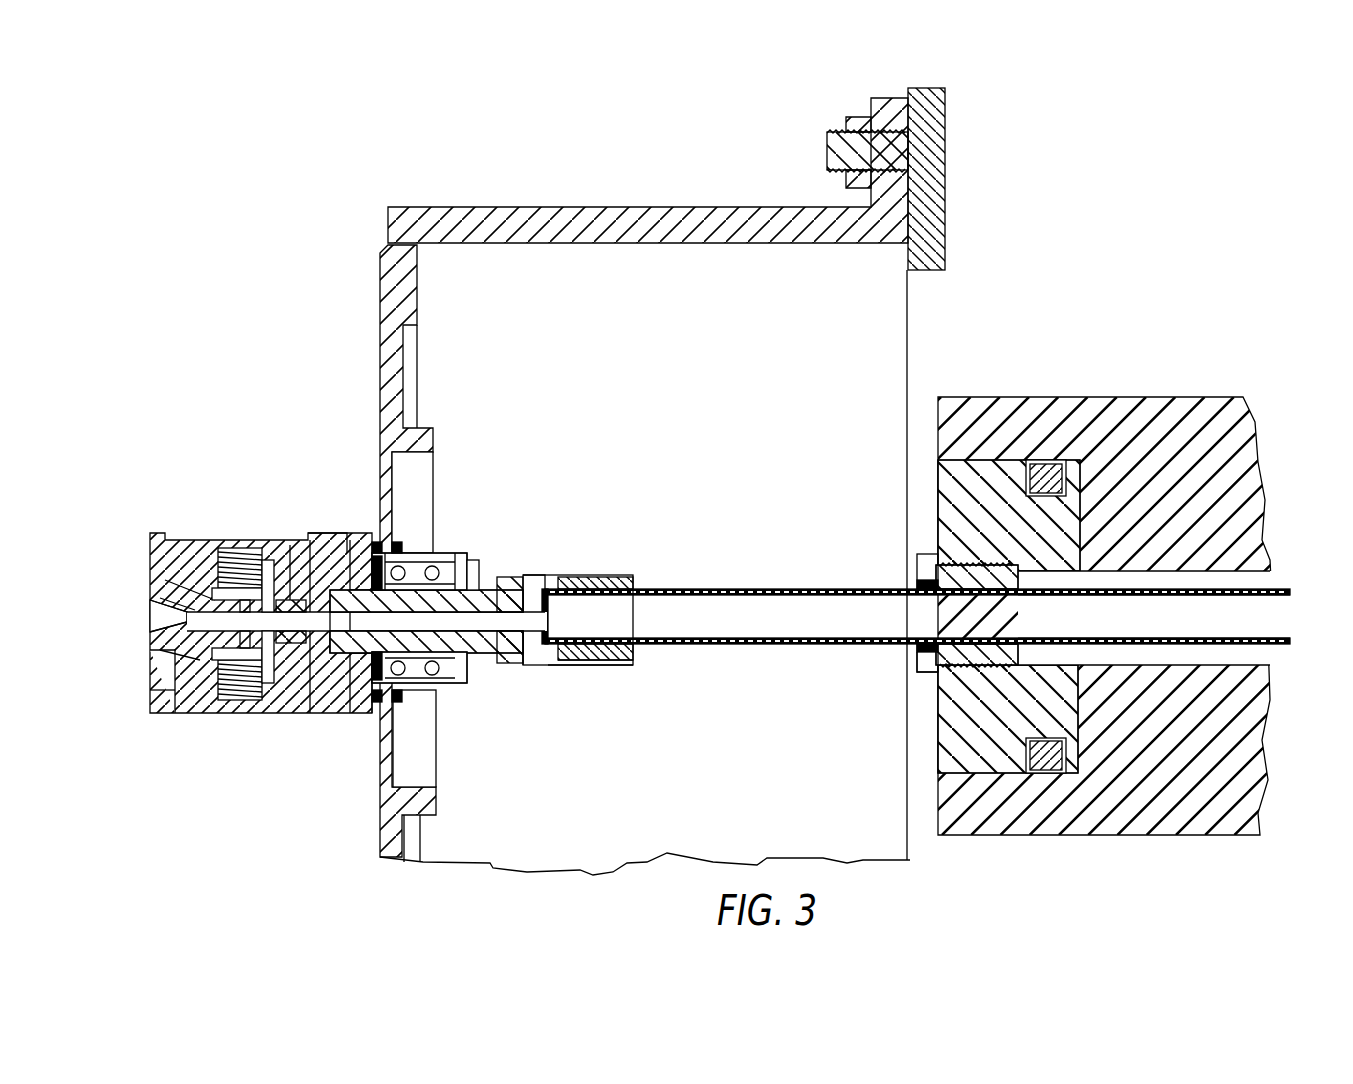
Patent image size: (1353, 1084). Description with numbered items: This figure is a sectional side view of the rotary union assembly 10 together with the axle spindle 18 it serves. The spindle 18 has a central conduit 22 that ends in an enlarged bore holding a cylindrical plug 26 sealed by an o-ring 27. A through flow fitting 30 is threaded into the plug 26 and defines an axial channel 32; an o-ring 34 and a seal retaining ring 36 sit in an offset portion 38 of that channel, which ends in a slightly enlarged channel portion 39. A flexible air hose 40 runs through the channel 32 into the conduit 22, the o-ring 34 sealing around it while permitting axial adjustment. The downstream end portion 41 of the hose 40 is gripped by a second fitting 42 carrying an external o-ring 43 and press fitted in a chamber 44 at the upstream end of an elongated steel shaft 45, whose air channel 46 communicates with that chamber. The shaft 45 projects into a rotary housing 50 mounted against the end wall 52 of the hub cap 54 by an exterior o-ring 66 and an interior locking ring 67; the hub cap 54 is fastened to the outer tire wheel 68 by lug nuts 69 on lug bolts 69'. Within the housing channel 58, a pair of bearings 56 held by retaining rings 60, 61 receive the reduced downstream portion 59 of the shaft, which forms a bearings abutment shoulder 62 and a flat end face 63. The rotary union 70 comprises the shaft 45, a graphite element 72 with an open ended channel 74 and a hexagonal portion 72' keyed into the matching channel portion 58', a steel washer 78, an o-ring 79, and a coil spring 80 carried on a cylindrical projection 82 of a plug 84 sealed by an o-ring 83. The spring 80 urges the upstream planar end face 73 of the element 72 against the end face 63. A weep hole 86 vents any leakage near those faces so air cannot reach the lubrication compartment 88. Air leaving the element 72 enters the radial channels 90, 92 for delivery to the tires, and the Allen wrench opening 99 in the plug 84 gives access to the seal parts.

The rotary union assembly 10 is at (666, 546).
The axle spindle 18 is at (1150, 397).
The conduit 22 is at (1255, 576).
The cylindrical plug 26 is at (910, 470).
The o-ring 27 is at (1040, 462).
The through flow fitting 30 is at (928, 566).
The axial channel 32 is at (1070, 616).
The o-ring 34 is at (925, 674).
The seal retaining ring 36 is at (912, 668).
The offset portion 38 is at (918, 560).
The enlarged channel portion 39 is at (912, 585).
The flexible air hose 40 is at (745, 589).
The downstream end portion 41 is at (580, 661).
The second fitting 42 is at (625, 577).
The external o-ring 43 is at (620, 666).
The chamber 44 is at (535, 585).
The elongated steel shaft 45 is at (535, 575).
The air channel 46 is at (520, 664).
The rotary housing 50 is at (152, 538).
The end wall 52 is at (380, 275).
The hub cap 54 is at (625, 207).
The bearings 56 is at (440, 553).
The channel 58 is at (225, 547).
The hexagonal channel portion 58' is at (261, 709).
The downstream portion of shaft 59 is at (447, 572).
The retaining ring 60 is at (475, 590).
The retaining ring 61 is at (368, 713).
The bearings abutment shoulder 62 is at (477, 583).
The flat end face 63 is at (288, 545).
The exterior o-ring 66 is at (375, 542).
The interior locking ring 67 is at (400, 701).
The outer tire wheel 68 is at (945, 250).
The wheel lug nuts 69 is at (837, 133).
The lug bolts 69' is at (833, 147).
The rotary union 70 is at (318, 533).
The graphite element 72 is at (293, 704).
The hexagonal portion 72' is at (266, 721).
The upstream planar end face 73 is at (345, 700).
The open ended channel 74 is at (268, 560).
The steel washer 78 is at (244, 548).
The o-ring 79 is at (245, 700).
The coil spring 80 is at (165, 714).
The cylindrical projection 82 is at (160, 600).
The o-ring 83 is at (155, 695).
The plug 84 is at (150, 660).
The weep hole 86 is at (393, 545).
The lubrication compartment 88 is at (645, 572).
The radial channel 90 is at (207, 713).
The radial channel 92 is at (228, 547).
The Allen wrench opening 99 is at (152, 616).